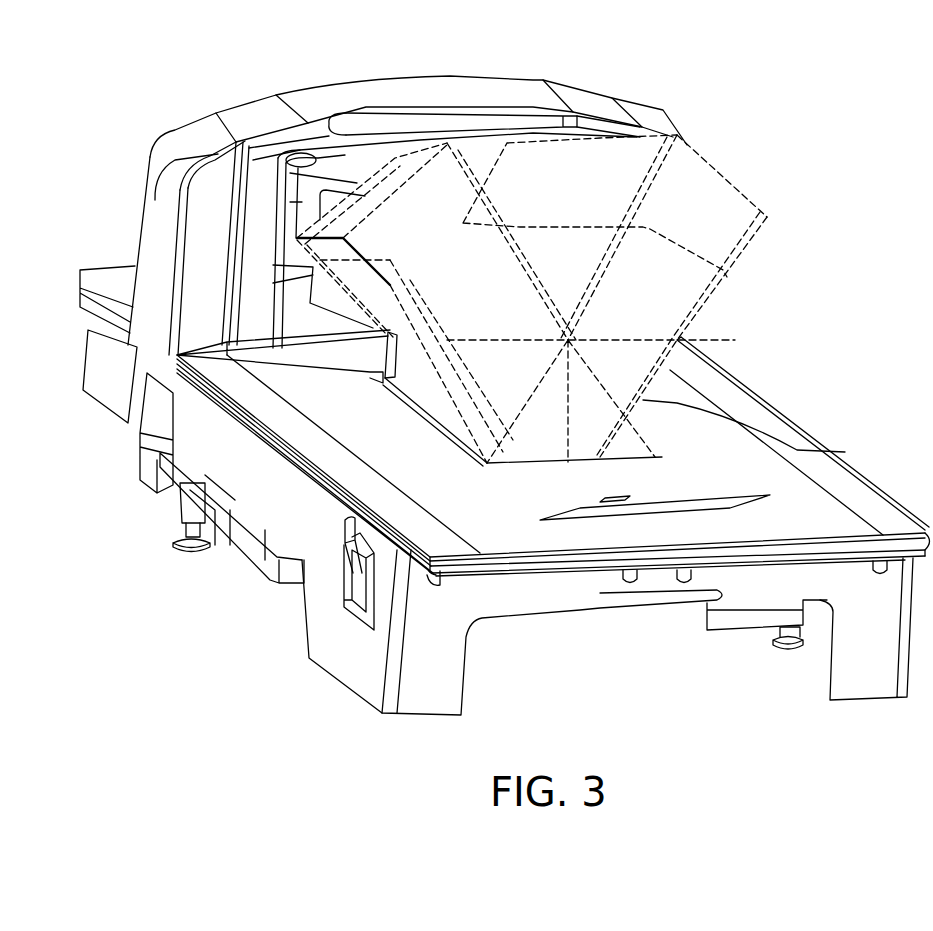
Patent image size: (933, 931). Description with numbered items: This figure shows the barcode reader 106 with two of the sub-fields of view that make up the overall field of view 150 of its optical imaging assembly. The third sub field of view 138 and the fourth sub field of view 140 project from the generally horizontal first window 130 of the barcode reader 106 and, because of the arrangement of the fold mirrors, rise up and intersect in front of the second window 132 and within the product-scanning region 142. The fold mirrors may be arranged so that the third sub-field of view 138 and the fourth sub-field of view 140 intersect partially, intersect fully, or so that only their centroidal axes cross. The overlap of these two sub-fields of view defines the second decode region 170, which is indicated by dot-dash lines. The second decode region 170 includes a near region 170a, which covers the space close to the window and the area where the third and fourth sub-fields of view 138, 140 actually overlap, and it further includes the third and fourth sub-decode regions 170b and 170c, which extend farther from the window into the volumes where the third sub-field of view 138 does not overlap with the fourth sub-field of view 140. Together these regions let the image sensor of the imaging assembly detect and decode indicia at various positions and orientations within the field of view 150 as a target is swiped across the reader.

The barcode reader 106 is at (486, 380).
The first window 130 is at (660, 455).
The second window 132 is at (305, 203).
The third sub field of view 138 is at (383, 333).
The fourth sub field of view 140 is at (718, 188).
The product-scanning region 142 is at (733, 377).
The field of view 150 is at (747, 277).
The second decode region 170 is at (620, 368).
The near region 170a is at (835, 452).
The third sub-decode region 170b is at (723, 265).
The fourth sub-decode region 170c is at (443, 223).